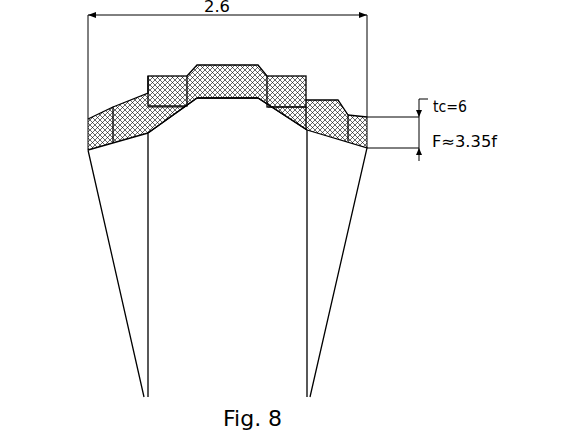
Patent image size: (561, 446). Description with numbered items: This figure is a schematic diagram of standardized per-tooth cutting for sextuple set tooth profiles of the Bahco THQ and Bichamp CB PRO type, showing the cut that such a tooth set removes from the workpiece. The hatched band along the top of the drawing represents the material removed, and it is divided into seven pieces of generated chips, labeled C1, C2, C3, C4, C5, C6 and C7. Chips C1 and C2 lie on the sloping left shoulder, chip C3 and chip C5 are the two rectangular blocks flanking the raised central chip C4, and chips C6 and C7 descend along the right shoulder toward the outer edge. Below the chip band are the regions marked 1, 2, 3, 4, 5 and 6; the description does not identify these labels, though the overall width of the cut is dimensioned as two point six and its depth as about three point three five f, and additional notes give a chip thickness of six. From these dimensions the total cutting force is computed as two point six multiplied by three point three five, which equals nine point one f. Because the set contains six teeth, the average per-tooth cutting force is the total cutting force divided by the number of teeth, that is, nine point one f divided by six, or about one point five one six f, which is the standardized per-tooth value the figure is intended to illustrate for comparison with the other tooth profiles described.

The generated chip C1 is at (92, 118).
The generated chip C2 is at (122, 106).
The generated chip C3 is at (170, 83).
The generated chip C4 is at (227, 78).
The generated chip C5 is at (285, 75).
The generated chip C6 is at (337, 108).
The generated chip C7 is at (365, 117).
The central body portion 1 is at (227, 247).
The left side body portion 2 is at (118, 265).
The right side body portion 3 is at (337, 263).
The gap region 4 is at (227, 115).
The left interface line 5 is at (160, 130).
The right interface line 6 is at (284, 118).